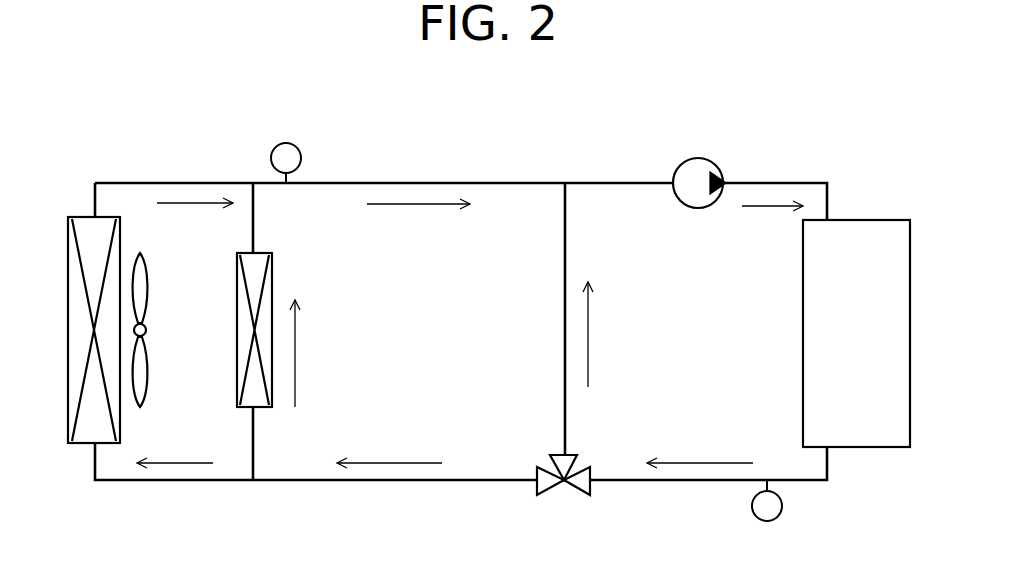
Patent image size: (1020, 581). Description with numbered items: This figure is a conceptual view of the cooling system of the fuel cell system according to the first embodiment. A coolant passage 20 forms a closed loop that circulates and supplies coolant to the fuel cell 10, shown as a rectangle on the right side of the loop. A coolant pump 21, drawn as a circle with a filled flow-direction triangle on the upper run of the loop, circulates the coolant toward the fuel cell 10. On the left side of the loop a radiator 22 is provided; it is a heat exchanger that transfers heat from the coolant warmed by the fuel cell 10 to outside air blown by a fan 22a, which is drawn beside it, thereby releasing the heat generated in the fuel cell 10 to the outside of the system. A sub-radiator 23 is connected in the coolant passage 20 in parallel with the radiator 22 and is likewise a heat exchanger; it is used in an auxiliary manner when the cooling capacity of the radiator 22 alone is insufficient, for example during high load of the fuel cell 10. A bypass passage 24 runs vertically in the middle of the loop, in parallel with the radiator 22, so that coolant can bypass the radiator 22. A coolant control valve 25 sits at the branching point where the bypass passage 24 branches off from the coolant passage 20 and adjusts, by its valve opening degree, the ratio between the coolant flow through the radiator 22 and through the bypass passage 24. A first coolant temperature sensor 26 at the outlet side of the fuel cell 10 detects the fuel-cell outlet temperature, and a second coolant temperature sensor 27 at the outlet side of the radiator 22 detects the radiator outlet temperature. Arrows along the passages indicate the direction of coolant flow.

The fuel cell 10 is at (882, 220).
The coolant passage 20 is at (390, 183).
The coolant pump 21 is at (698, 158).
The radiator 22 is at (79, 217).
The fan 22a is at (140, 251).
The sub-radiator 23 is at (243, 253).
The bypass passage 24 is at (565, 212).
The coolant control valve 25 is at (556, 494).
The first coolant temperature sensor 26 is at (767, 521).
The second coolant temperature sensor 27 is at (286, 143).